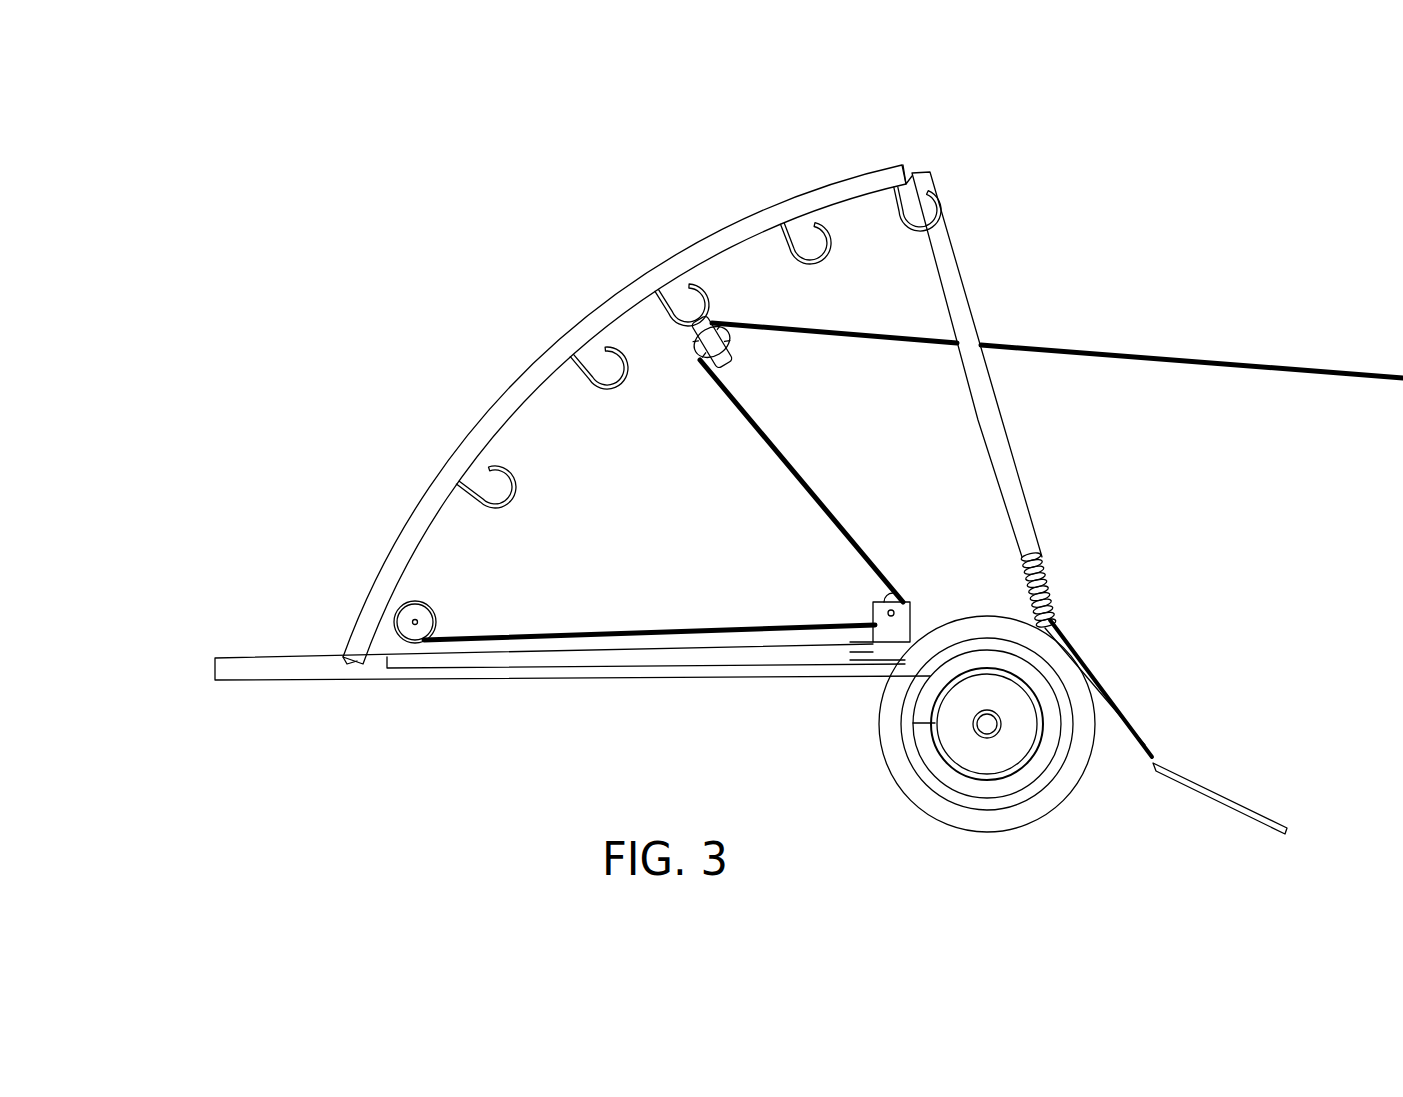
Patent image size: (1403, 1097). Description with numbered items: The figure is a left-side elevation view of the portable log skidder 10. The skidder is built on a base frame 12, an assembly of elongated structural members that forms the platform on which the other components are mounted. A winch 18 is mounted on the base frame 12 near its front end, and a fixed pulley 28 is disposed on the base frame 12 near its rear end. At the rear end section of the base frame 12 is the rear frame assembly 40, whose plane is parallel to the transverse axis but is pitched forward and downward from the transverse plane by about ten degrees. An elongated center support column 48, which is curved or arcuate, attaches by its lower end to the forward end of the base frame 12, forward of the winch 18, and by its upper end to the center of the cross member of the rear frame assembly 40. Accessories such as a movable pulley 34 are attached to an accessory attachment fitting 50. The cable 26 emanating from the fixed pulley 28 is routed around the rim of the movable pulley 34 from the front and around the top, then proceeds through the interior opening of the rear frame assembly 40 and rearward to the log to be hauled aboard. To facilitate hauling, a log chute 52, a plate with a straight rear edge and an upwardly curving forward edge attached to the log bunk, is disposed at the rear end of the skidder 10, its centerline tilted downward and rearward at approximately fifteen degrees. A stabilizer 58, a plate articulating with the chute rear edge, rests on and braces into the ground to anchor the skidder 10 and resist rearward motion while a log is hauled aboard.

The portable log skidder 10 is at (293, 503).
The base frame 12 is at (530, 685).
The winch 18 is at (415, 622).
The cable 26 is at (1122, 355).
The fixed pulley 28 is at (873, 630).
The movable pulley 34 is at (708, 345).
The rear frame assembly 40 is at (990, 262).
The center support column 48 is at (495, 400).
The accessory attachment fitting 50 is at (808, 238).
The log chute 52 is at (1092, 662).
The stabilizer 58 is at (1193, 782).